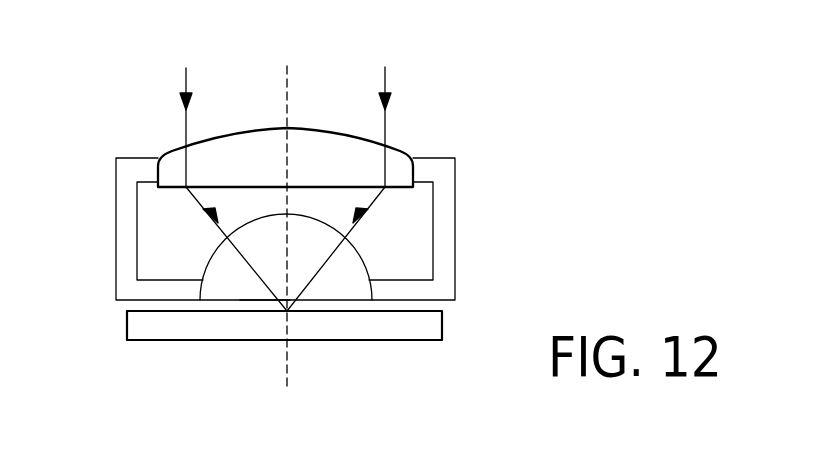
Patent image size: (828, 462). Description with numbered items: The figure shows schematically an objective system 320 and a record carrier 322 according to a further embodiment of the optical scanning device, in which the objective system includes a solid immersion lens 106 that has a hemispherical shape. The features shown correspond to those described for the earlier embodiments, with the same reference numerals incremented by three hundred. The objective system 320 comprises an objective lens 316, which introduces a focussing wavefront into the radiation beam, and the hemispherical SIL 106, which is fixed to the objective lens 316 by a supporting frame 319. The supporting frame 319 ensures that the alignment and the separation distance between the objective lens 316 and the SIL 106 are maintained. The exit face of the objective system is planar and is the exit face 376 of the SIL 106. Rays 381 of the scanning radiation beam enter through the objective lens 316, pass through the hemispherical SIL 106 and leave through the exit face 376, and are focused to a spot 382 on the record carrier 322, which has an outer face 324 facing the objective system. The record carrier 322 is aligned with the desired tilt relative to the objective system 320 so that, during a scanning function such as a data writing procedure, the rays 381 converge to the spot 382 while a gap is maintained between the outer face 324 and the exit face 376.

The rays 381 is at (187, 76).
The objective lens 316 is at (347, 146).
The supporting frame 319 is at (445, 198).
The objective system 320 is at (116, 242).
The solid immersion lens 106 is at (347, 268).
The record carrier 322 is at (190, 330).
The outer face 324 is at (150, 312).
The exit face 376 is at (263, 302).
The spot 382 is at (288, 312).